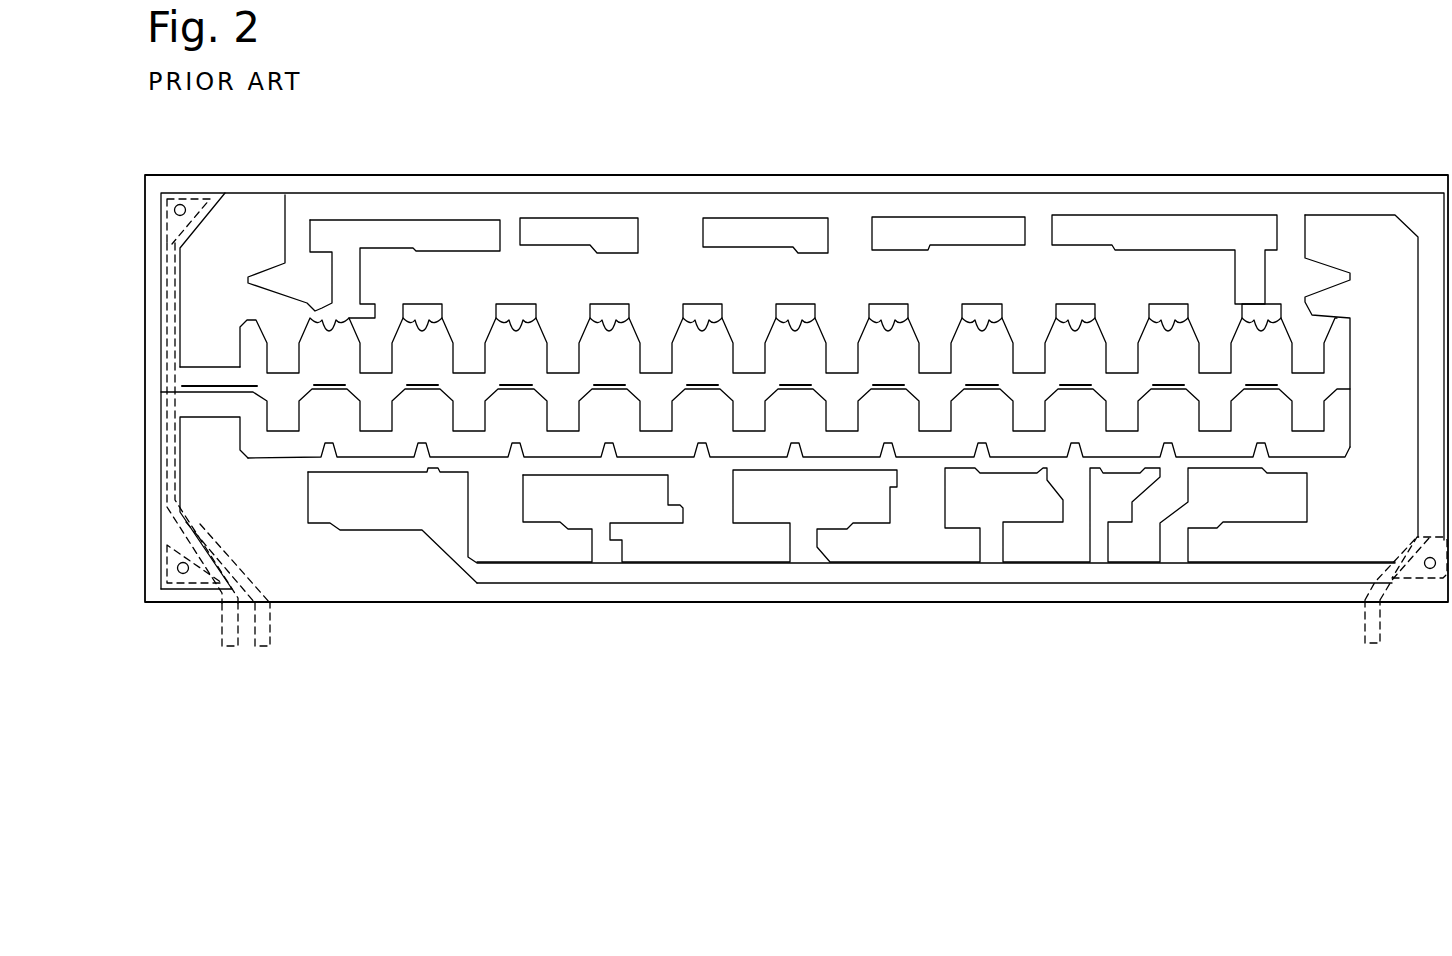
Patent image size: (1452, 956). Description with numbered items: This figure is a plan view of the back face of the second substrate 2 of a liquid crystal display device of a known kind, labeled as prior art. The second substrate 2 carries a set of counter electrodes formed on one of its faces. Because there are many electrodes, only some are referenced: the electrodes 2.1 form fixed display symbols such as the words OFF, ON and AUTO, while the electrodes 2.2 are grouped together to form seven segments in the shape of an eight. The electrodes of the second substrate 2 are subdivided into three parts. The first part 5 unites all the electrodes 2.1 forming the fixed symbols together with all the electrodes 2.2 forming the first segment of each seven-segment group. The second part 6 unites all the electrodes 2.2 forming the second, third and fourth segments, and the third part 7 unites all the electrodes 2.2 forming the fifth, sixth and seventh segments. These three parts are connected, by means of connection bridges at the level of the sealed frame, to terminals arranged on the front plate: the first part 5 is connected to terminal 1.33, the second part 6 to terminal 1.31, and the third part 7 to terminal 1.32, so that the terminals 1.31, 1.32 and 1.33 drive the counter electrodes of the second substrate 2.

The second substrate 2 is at (1036, 602).
The electrodes forming fixed symbols 2.1 is at (278, 275).
The electrodes forming groups of seven segments 2.2 is at (753, 333).
The first part 5 is at (1103, 204).
The second part 6 is at (167, 437).
The third part 7 is at (167, 314).
The connection terminal 1.31 is at (227, 653).
The connection terminal 1.32 is at (262, 653).
The connection terminal 1.33 is at (1372, 652).